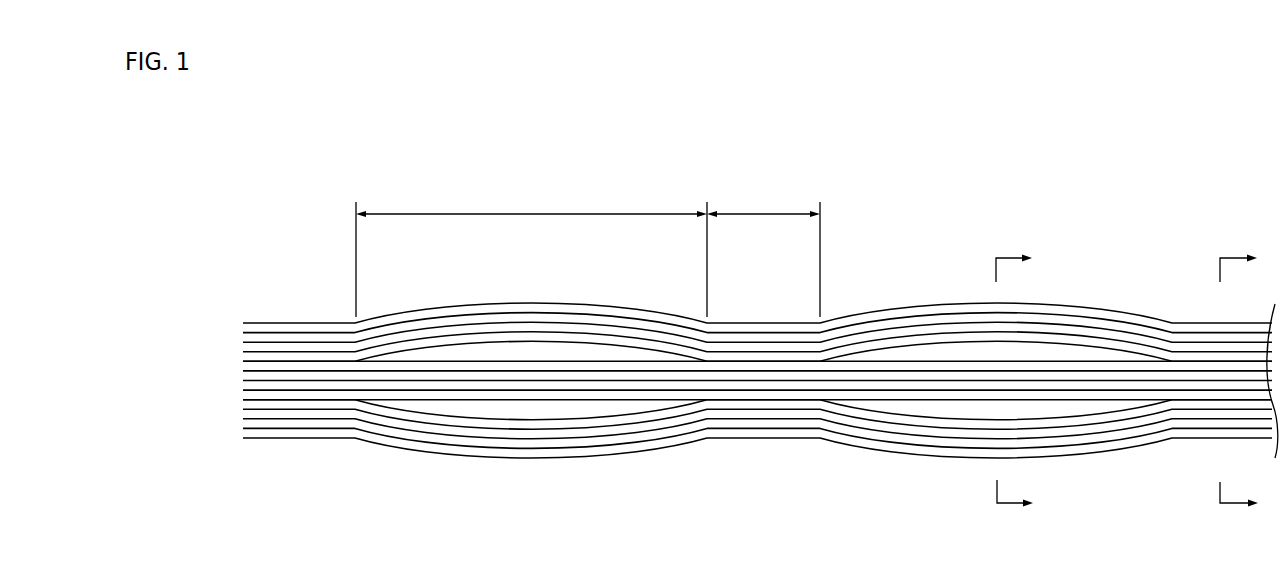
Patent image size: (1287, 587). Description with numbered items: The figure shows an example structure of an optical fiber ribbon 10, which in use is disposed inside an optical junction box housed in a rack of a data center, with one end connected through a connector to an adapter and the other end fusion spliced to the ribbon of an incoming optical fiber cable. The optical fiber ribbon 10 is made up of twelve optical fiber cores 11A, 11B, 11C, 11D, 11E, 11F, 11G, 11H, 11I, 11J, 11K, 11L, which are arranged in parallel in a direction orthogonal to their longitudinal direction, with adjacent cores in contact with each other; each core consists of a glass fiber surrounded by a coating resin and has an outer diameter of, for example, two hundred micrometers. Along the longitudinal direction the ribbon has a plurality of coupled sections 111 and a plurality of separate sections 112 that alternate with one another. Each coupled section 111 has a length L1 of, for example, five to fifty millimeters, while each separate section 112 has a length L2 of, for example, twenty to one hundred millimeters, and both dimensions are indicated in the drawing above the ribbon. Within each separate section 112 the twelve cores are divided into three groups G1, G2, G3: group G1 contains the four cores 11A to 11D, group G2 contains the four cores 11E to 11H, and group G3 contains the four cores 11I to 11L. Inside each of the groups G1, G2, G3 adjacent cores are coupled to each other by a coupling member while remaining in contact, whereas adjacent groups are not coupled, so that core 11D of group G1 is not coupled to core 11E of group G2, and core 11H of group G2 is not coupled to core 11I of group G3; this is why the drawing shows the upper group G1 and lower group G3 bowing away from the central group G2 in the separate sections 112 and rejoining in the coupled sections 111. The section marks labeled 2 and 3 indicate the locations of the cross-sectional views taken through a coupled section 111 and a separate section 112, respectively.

The optical fiber ribbon 10 is at (911, 215).
The optical fiber core 11A is at (243, 324).
The optical fiber core 11B is at (243, 334).
The optical fiber core 11C is at (243, 344).
The optical fiber core 11D is at (243, 354).
The optical fiber core 11E is at (243, 363).
The optical fiber core 11F is at (243, 372).
The optical fiber core 11G is at (243, 391).
The optical fiber core 11H is at (243, 401).
The optical fiber core 11I is at (243, 410).
The optical fiber core 11J is at (243, 419).
The optical fiber core 11K is at (243, 429).
The optical fiber core 11L is at (243, 438).
The coupled section 111 is at (294, 459).
The separate section 112 is at (523, 479).
The group G1 is at (593, 327).
The group G2 is at (478, 395).
The group G3 is at (413, 436).
The length of coupled section L1 is at (763, 253).
The length of separate section L2 is at (531, 253).
The section line II-II 2 is at (1246, 384).
The section line III-III 3 is at (1023, 384).